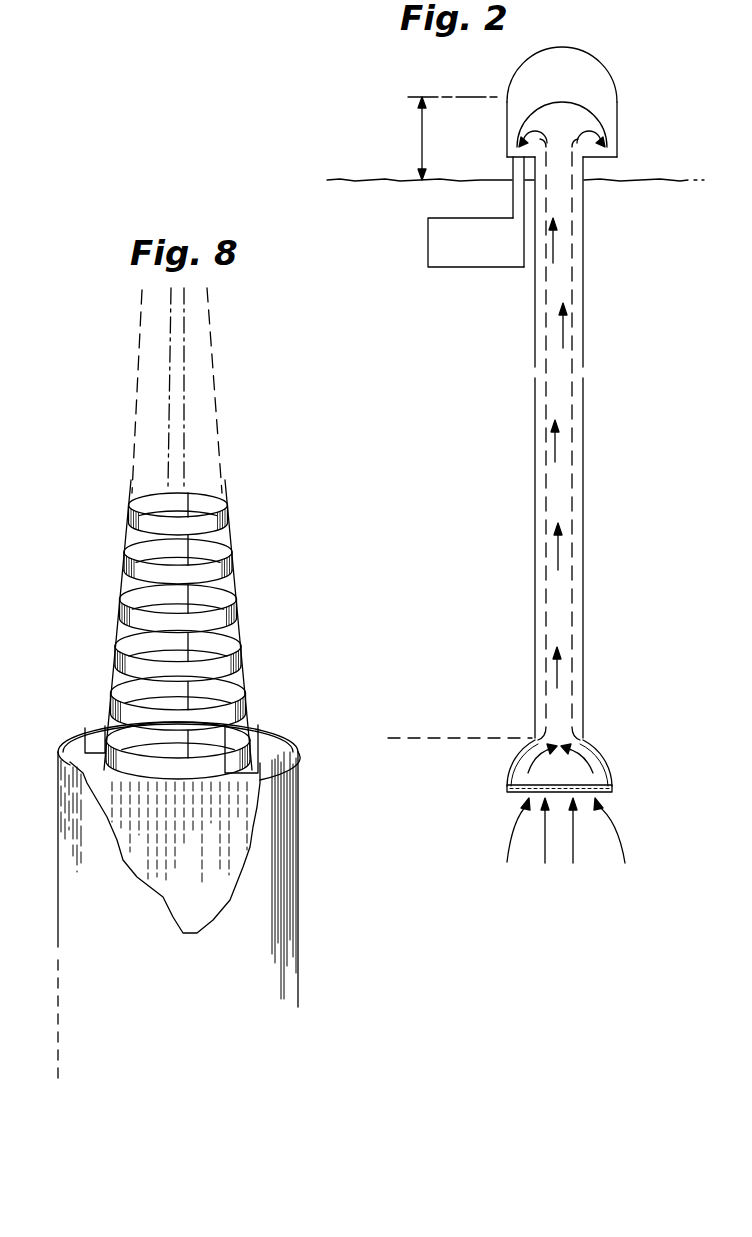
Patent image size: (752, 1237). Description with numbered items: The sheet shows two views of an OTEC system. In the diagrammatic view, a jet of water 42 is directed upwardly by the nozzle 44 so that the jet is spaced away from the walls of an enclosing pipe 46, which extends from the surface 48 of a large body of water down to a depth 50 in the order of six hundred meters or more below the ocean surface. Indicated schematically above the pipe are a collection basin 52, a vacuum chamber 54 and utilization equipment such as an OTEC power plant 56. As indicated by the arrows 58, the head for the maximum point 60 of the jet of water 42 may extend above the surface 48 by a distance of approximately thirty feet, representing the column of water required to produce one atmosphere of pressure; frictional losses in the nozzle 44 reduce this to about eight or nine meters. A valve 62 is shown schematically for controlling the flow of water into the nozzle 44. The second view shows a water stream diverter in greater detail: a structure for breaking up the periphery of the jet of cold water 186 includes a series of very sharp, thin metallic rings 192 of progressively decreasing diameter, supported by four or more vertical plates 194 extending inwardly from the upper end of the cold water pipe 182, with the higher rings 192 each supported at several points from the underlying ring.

In FIG. 2, the jet of water 42 is at (558, 503).
In FIG. 2, the nozzle 44 is at (582, 738).
In FIG. 2, the enclosing pipe 46 is at (535, 405).
In FIG. 2, the surface 48 is at (370, 183).
In FIG. 2, the depth 50 is at (477, 737).
In FIG. 2, the collection basin 52 is at (610, 148).
In FIG. 2, the vacuum chamber 54 is at (525, 68).
In FIG. 2, the OTEC power plant 56 is at (488, 253).
In FIG. 2, the arrows 58 is at (420, 139).
In FIG. 2, the maximum point 60 is at (593, 107).
In FIG. 2, the valve 62 is at (523, 792).
In FIG. 8, the cold water pipe 182 is at (277, 866).
In FIG. 8, the jet of cold water 186 is at (185, 853).
In FIG. 8, the metallic rings 192 is at (208, 718).
In FIG. 8, the vertical plates 194 is at (112, 670).